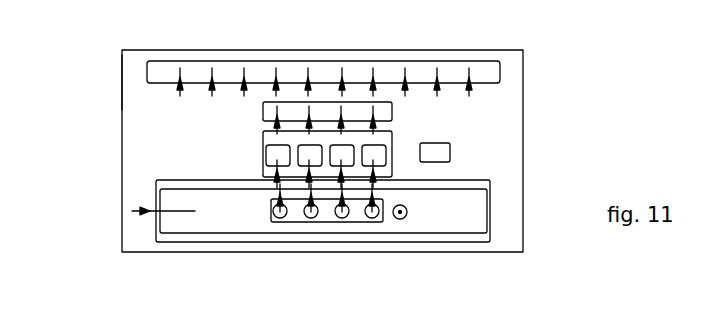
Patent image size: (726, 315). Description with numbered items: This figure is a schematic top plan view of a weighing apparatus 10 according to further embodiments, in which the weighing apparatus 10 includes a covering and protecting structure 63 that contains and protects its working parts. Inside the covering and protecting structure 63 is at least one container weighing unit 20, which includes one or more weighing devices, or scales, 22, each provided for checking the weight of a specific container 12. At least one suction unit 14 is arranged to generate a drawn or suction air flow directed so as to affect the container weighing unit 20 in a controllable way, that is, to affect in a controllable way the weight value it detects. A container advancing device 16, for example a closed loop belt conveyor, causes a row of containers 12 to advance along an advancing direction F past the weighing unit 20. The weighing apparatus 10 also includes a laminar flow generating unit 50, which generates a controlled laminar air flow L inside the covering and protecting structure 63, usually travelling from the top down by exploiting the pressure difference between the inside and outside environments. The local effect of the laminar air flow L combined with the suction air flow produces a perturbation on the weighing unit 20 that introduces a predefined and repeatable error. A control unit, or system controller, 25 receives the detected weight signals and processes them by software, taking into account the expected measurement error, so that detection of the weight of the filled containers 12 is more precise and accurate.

The weighing apparatus 10 is at (558, 83).
The covering and protecting structure 63 is at (122, 87).
The laminar flow generating unit 50 is at (296, 76).
The laminar air flow L is at (212, 75).
The suction unit 14 is at (387, 101).
The container weighing unit 20 is at (241, 167).
The weighing device 22 is at (272, 155).
The control unit 25 is at (438, 152).
The container advancing device 16 is at (491, 209).
The container 12 is at (310, 245).
The advancing direction F is at (176, 214).